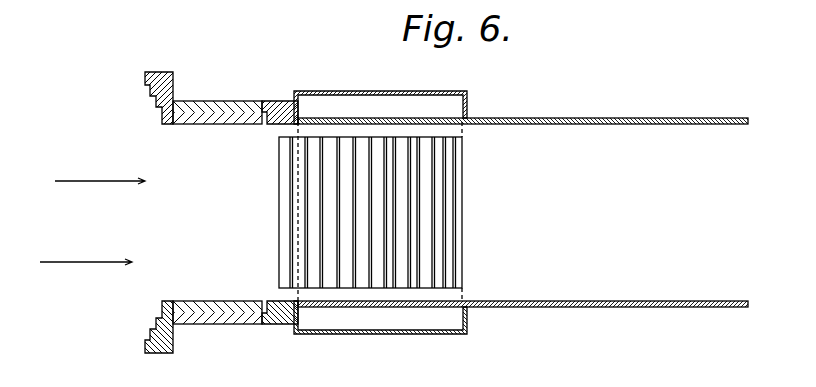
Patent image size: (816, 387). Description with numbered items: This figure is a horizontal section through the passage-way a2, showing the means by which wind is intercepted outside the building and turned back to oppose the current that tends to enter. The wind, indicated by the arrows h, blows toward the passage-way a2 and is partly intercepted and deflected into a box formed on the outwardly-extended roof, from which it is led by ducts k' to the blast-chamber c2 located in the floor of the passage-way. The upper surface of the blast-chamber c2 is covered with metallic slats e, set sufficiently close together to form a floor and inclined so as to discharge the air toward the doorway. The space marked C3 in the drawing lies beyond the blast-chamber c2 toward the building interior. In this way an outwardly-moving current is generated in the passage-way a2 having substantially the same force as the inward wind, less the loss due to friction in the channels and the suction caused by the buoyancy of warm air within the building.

The ducts k' is at (380, 210).
The arrows h is at (88, 178).
The passage-way a2 is at (221, 212).
The metallic slats e is at (455, 180).
The blast-chamber c2 is at (432, 288).
The outlet chamber / tube C3 is at (523, 212).